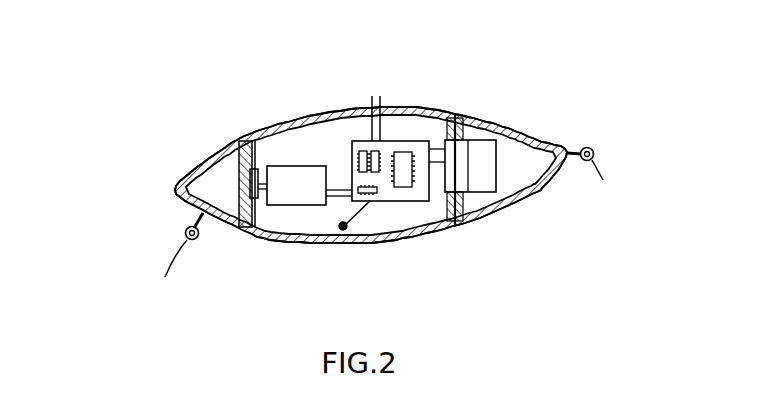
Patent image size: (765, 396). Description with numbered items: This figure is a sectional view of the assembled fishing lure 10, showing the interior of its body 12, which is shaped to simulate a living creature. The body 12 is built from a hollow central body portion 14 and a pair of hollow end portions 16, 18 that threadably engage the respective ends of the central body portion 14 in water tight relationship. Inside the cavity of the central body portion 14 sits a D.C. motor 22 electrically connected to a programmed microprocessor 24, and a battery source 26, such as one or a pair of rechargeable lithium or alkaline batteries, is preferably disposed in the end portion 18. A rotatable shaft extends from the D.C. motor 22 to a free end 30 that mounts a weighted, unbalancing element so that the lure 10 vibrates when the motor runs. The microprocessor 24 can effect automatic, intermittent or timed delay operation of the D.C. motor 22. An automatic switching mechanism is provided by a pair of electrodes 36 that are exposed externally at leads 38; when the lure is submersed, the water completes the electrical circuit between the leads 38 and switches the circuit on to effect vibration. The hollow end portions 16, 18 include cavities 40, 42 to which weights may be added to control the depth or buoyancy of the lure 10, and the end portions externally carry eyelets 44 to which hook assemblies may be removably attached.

The fishing lure 10 is at (433, 110).
The body 12 is at (345, 109).
The central body portion 14 is at (322, 243).
The end portion 16 is at (209, 136).
The end portion 18 is at (536, 137).
The D.C. motor 22 is at (292, 198).
The programmed microprocessor 24 is at (412, 200).
The battery source 26 is at (479, 148).
The free end 30 is at (253, 168).
The electrodes 36 is at (462, 102).
The leads 38 is at (393, 110).
The cavity 40 is at (170, 198).
The cavity 42 is at (523, 160).
The eyelets 44 is at (396, 232).